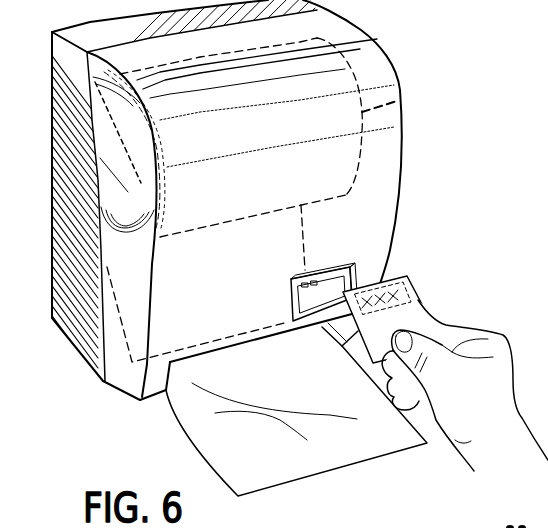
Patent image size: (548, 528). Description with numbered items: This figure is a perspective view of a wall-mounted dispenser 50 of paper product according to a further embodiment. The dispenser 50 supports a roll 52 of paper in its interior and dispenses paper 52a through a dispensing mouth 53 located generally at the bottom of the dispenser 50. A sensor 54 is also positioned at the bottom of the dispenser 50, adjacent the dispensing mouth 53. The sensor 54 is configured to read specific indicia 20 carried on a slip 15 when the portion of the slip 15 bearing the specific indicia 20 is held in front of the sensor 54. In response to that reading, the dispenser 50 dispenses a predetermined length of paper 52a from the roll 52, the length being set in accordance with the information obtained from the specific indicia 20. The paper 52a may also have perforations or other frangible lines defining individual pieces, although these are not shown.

The wall-mounted dispenser 50 is at (273, 209).
The roll of paper 52 is at (401, 100).
The paper 52a is at (342, 455).
The dispensing mouth 53 is at (210, 354).
The sensor 54 is at (313, 276).
The slip 15 is at (396, 288).
The specific indicia 20 is at (415, 298).